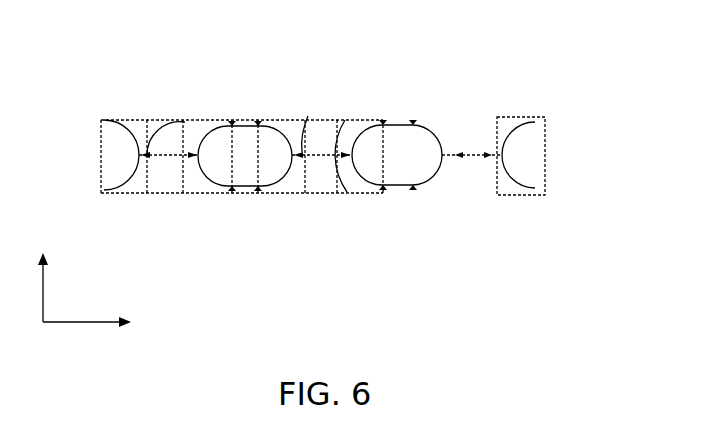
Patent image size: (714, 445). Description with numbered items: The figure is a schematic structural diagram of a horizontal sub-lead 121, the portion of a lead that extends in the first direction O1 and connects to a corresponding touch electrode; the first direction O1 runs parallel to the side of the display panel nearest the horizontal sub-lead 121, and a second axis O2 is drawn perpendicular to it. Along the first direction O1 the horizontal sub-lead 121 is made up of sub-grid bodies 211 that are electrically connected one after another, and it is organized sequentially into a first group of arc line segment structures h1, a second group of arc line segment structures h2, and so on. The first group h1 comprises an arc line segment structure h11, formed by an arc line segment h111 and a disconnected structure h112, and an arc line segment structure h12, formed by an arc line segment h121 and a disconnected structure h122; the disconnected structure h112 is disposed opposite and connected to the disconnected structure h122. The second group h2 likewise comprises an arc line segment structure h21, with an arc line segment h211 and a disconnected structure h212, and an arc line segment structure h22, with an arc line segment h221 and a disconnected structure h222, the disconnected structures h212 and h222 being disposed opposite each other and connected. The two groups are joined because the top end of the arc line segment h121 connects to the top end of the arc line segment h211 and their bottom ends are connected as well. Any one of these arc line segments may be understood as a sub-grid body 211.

The horizontal sub-lead 121 is at (126, 73).
The arc line segment h111 is at (125, 120).
The disconnected structure h112 is at (168, 123).
The arc line segment structure h11 is at (138, 194).
The arc line segment structure h12 is at (232, 188).
The arc line segment h121 is at (210, 190).
The disconnected structure h122 is at (195, 156).
The arc line segment structure h21 is at (285, 194).
The arc line segment structure h22 is at (380, 196).
The arc line segment h211 is at (267, 122).
The disconnected structure h212 is at (324, 124).
The arc line segment h221 is at (372, 195).
The disconnected structure h222 is at (347, 194).
The first group of arc line segment structures h1 is at (480, 282).
The second group of arc line segment structures h2 is at (570, 282).
The sub-grid body 211 is at (545, 190).
The first direction O1 is at (103, 323).
The second direction O2 is at (44, 274).